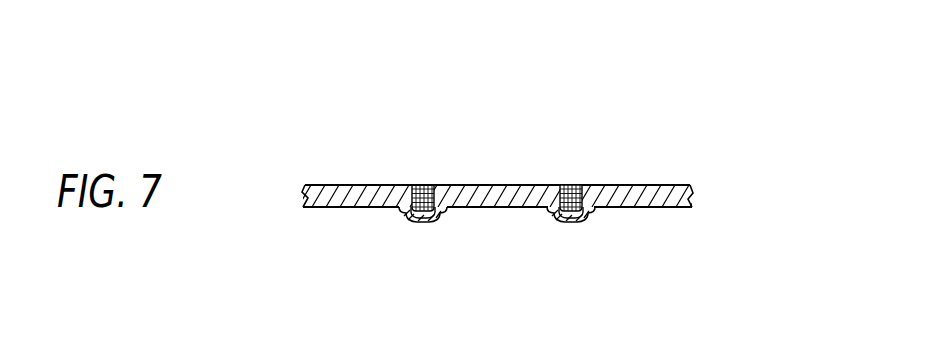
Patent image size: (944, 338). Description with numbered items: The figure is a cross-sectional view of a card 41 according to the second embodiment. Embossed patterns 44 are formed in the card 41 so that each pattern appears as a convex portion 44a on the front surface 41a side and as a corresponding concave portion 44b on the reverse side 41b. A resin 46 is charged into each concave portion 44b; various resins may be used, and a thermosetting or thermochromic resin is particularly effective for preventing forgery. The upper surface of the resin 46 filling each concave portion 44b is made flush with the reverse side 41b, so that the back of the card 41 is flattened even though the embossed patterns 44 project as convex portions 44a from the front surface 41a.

The card 41 is at (707, 144).
The front surface 41a is at (339, 209).
The reverse side 41b is at (361, 185).
The embossed pattern 44 is at (567, 220).
The convex portion 44a is at (591, 224).
The concave portion 44b is at (542, 202).
The resin 46 is at (572, 185).